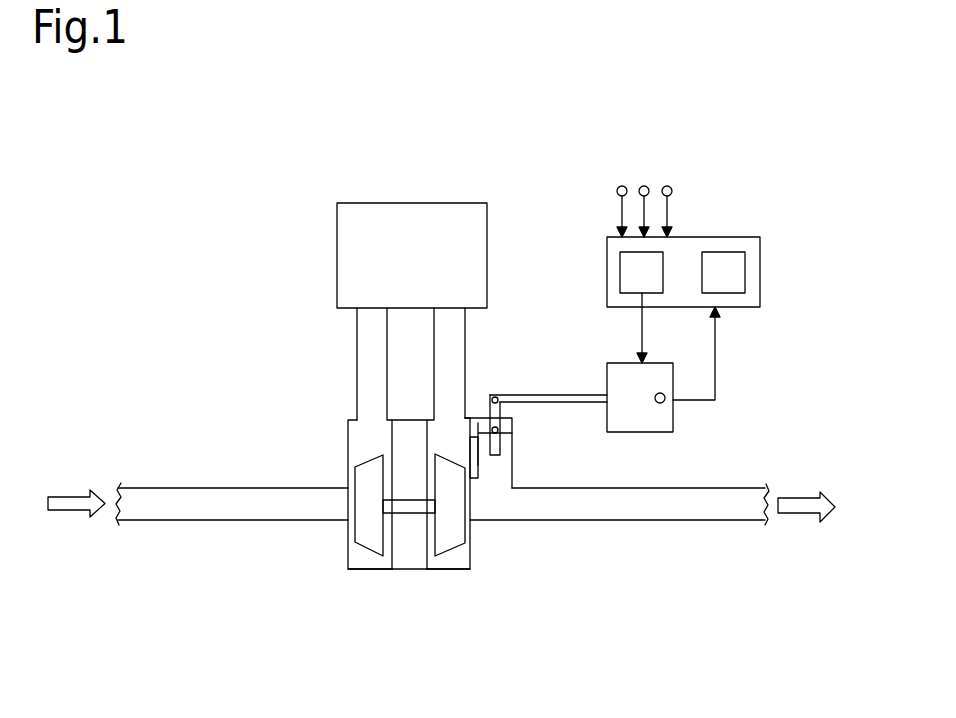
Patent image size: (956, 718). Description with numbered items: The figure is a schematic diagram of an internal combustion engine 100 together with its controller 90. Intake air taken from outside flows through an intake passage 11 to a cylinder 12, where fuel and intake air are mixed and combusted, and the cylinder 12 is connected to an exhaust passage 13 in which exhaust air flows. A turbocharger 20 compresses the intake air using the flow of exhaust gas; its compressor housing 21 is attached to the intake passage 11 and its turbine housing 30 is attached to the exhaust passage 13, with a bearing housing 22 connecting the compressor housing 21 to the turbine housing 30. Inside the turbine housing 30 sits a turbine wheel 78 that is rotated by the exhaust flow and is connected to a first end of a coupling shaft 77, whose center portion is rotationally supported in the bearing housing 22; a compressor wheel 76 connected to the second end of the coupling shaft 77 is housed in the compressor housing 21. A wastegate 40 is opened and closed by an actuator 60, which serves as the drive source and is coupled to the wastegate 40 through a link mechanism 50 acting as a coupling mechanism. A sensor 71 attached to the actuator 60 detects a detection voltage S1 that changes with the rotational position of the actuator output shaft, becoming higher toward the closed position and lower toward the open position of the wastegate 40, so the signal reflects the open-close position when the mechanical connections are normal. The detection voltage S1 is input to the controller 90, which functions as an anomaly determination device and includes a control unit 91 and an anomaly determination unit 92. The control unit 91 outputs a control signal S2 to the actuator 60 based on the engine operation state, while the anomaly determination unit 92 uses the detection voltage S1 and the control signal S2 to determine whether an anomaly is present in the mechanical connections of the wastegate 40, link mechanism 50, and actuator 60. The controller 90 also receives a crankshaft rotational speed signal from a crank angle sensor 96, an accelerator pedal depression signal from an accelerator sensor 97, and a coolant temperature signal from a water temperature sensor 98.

The internal combustion engine 100 is at (141, 186).
The cylinder 12 is at (337, 254).
The intake passage 11 is at (357, 352).
The exhaust passage 13 is at (465, 353).
The turbocharger 20 is at (348, 437).
The compressor housing 21 is at (362, 569).
The bearing housing 22 is at (410, 569).
The turbine housing 30 is at (452, 569).
The compressor wheel 76 is at (357, 551).
The coupling shaft 77 is at (410, 497).
The turbine wheel 78 is at (462, 549).
The wastegate 40 is at (502, 443).
The link mechanism 50 is at (556, 394).
The actuator 60 is at (641, 432).
The sensor 71 is at (664, 403).
The controller 90 is at (726, 237).
The control unit 91 is at (620, 272).
The anomaly determination unit 92 is at (745, 274).
The crank angle sensor 96 is at (620, 185).
The accelerator sensor 97 is at (645, 185).
The water temperature sensor 98 is at (669, 186).
The detection voltage S1 is at (710, 353).
The control signal S2 is at (627, 328).